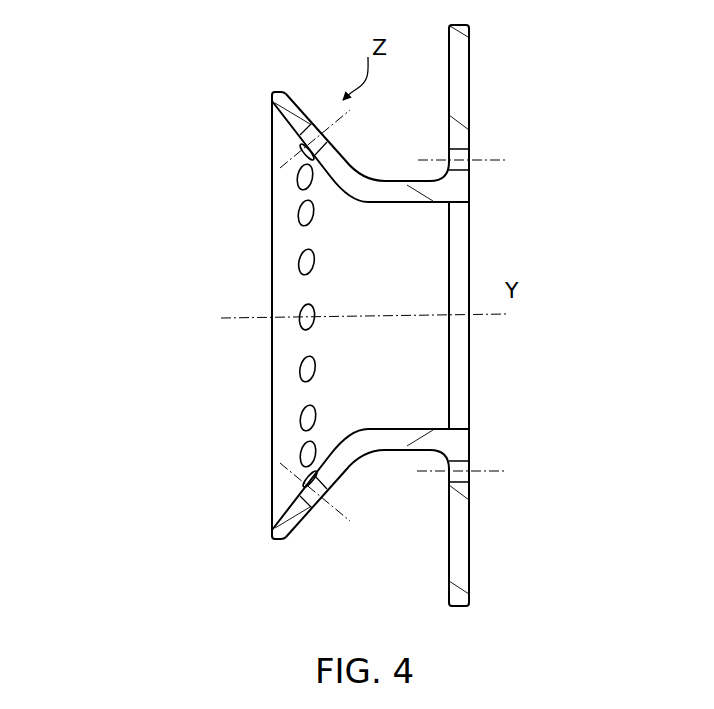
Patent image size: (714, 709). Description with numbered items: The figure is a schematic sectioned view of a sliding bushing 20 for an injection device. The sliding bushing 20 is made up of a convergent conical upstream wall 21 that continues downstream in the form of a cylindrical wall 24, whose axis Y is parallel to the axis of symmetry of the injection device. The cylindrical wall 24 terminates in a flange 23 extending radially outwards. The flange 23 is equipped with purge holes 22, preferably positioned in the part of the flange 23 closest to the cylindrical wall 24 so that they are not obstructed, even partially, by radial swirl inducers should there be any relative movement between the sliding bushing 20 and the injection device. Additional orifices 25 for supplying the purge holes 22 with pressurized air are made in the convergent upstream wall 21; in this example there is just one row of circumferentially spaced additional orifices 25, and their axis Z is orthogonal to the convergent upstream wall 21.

The sliding bushing 20 is at (177, 255).
The convergent upstream wall 21 is at (288, 97).
The purge holes 22 is at (469, 153).
The flange 23 is at (469, 62).
The cylindrical wall 24 is at (382, 172).
The additional orifices 25 is at (300, 151).